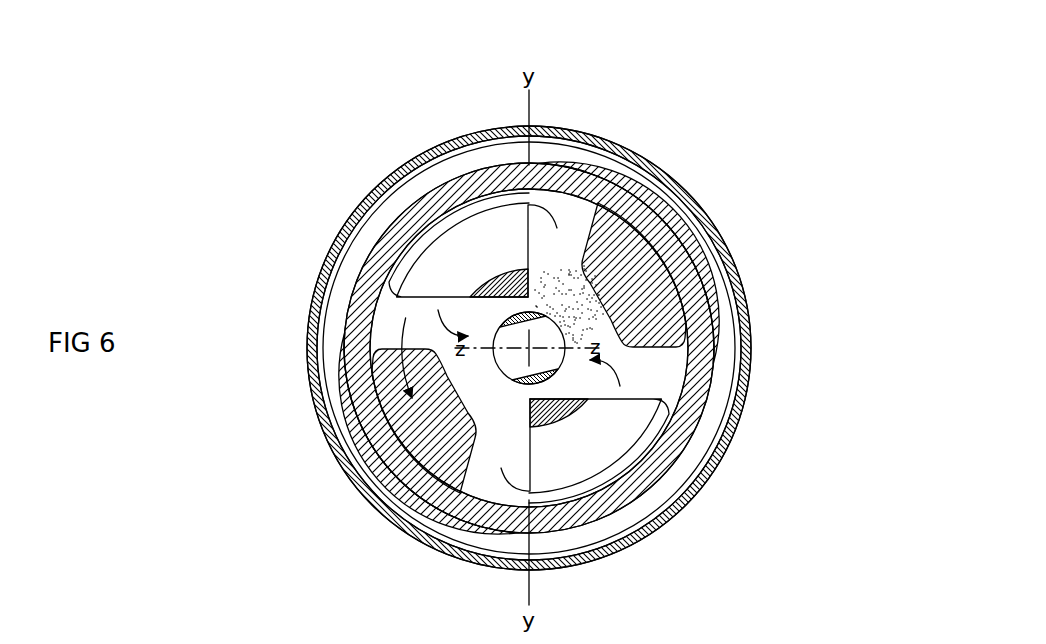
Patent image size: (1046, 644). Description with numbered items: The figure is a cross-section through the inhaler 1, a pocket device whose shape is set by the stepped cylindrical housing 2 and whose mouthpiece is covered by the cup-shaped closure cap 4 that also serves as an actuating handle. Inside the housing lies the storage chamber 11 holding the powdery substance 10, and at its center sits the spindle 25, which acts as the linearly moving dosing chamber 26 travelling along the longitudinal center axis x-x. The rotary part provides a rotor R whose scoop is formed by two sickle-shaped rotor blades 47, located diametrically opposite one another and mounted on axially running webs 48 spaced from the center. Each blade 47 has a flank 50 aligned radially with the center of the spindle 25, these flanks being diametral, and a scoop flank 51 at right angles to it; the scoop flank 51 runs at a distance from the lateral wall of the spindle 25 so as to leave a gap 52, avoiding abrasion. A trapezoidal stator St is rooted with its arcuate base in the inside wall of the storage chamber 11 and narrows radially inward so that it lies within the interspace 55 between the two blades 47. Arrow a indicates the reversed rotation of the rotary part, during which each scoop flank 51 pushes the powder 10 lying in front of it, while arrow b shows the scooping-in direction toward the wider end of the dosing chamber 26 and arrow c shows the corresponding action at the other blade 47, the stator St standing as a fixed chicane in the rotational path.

The inhaler 1 is at (683, 143).
The cylindrical housing 2 is at (418, 478).
The closure cap 4 is at (316, 318).
The powdery substance 10 is at (540, 335).
The storage chamber 11 is at (627, 473).
The spindle 25 is at (505, 373).
The dosing chamber 26 is at (542, 362).
The rotor blades 47 is at (430, 256).
The webs 48 is at (517, 255).
The flank 50 is at (557, 222).
The scoop flank 51 is at (423, 297).
The gap 52 is at (525, 305).
The interspace 55 is at (600, 303).
The stator St is at (630, 275).
The rotor R is at (447, 227).
The arrow a is at (400, 366).
The arrow b is at (622, 371).
The arrow c is at (449, 317).
The longitudinal center axis x-x is at (633, 213).